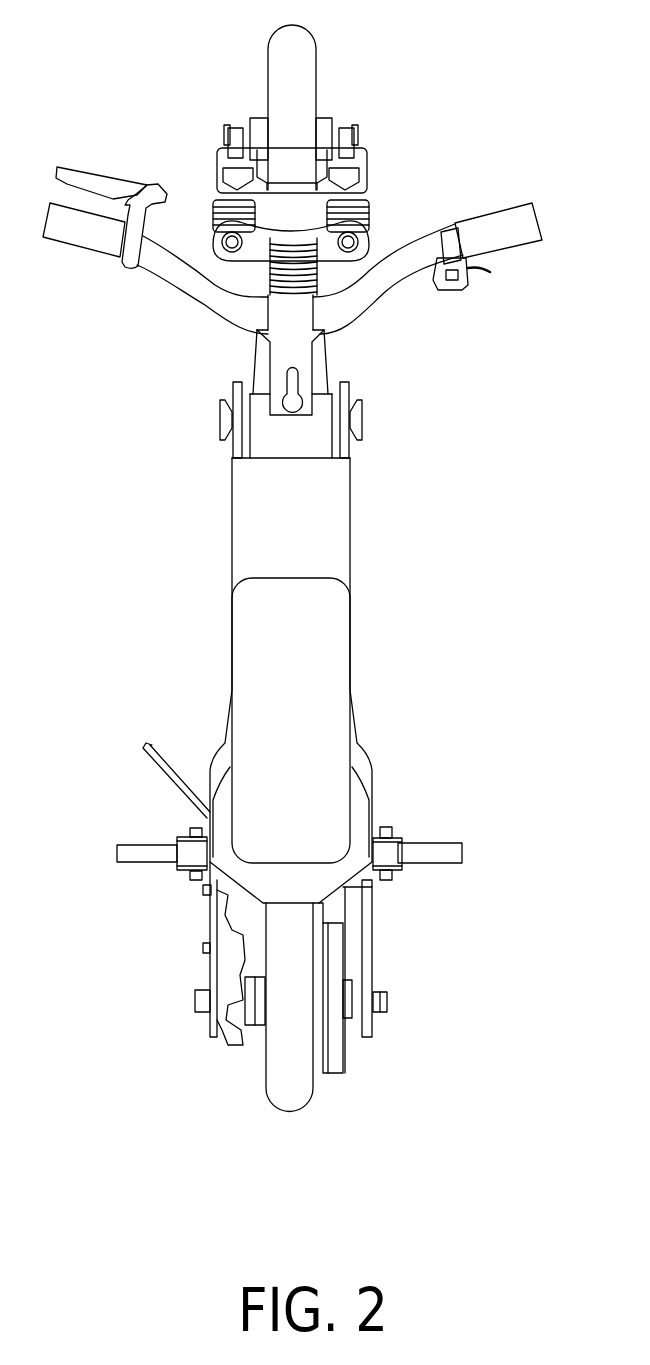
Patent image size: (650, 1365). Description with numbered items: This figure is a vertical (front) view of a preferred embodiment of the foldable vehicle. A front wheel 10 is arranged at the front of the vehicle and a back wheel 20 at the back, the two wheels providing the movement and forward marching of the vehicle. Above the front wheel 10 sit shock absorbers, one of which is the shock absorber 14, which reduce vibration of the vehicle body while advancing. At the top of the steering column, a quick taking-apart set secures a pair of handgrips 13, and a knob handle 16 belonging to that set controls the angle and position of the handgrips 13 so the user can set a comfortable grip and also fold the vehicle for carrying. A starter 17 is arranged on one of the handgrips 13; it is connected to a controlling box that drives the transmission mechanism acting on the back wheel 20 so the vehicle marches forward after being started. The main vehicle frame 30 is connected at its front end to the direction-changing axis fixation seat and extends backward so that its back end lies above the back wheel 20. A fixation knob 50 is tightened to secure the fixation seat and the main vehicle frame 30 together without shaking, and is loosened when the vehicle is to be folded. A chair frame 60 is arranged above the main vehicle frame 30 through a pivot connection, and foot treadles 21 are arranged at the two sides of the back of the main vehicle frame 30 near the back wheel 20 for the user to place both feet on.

The front wheel 10 is at (303, 50).
The handgrips 13 is at (393, 285).
The shock absorber 14 is at (215, 196).
The knob handle 16 is at (292, 383).
The starter 17 is at (465, 283).
The back wheel 20 is at (302, 1093).
The foot treadles 21 is at (150, 852).
The main vehicle frame 30 is at (340, 528).
The fixation knob 50 is at (220, 419).
The chair frame 60 is at (325, 672).